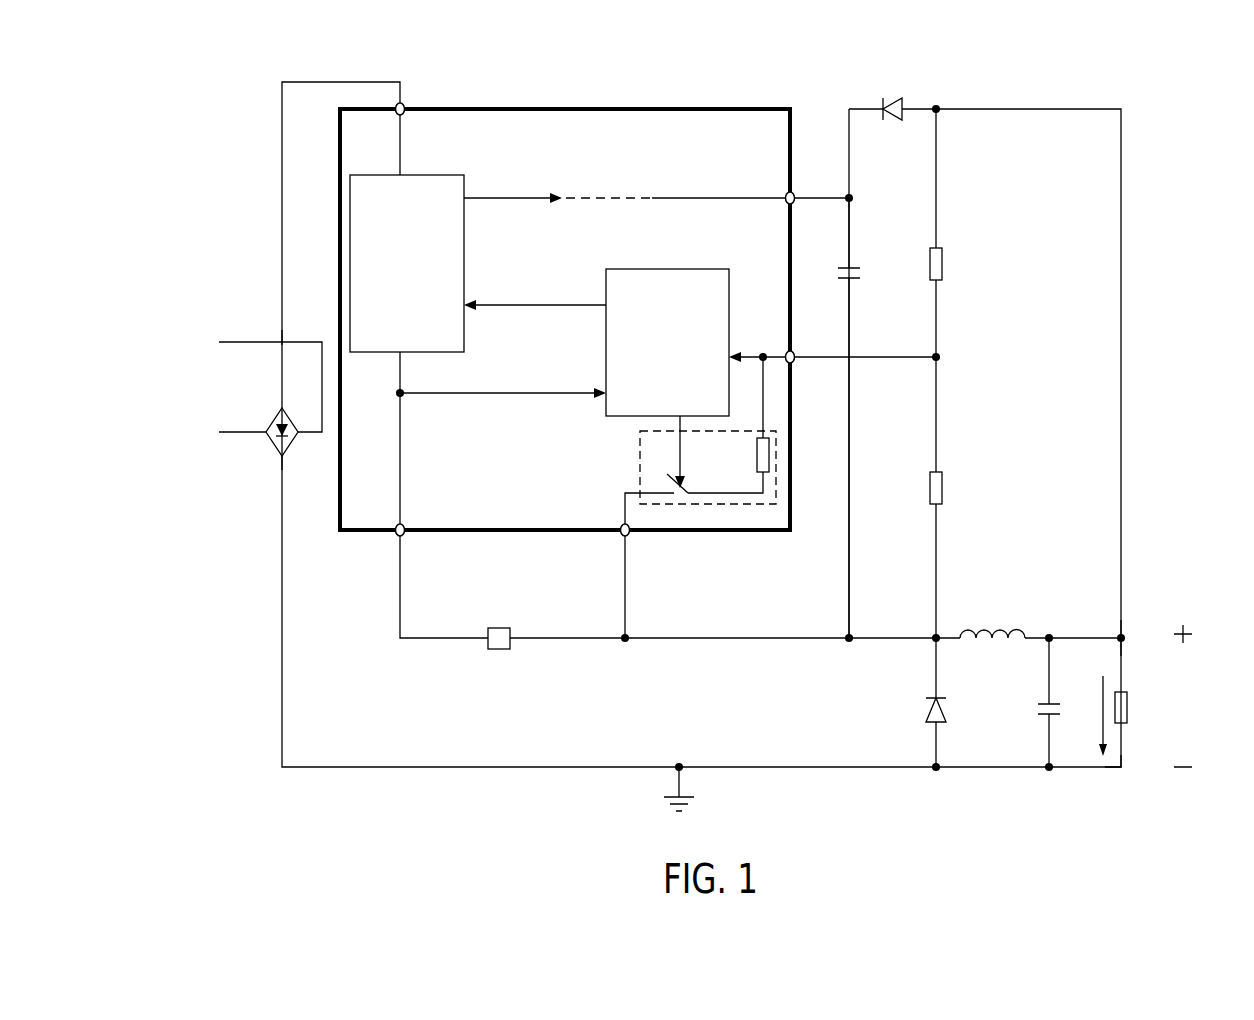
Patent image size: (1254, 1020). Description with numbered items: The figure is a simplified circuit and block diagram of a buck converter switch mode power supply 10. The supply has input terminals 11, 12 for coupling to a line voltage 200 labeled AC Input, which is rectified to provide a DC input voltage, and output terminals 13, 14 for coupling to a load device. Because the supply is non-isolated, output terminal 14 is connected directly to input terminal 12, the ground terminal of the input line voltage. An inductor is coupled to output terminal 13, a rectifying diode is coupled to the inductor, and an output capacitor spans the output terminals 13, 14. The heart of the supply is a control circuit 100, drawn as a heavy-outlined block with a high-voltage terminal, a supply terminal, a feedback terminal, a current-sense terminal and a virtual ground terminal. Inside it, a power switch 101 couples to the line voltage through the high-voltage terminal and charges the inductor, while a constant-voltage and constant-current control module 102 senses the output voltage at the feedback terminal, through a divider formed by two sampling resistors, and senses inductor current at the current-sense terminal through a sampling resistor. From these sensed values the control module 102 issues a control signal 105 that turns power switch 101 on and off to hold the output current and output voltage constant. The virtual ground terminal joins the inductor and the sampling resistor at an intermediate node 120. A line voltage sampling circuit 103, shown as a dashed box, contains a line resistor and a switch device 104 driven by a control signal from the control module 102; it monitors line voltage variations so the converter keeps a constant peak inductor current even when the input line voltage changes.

The buck converter switch mode power supply 10 is at (1144, 82).
The input terminal 11 is at (277, 336).
The input terminal 12 is at (278, 458).
The output terminal 13 is at (1114, 630).
The output terminal 14 is at (1107, 772).
The control circuit 100 is at (583, 109).
The power switch 101 is at (440, 175).
The constant-voltage and constant-current control module 102 is at (663, 269).
The line voltage sampling circuit 103 is at (640, 466).
The switch device 104 is at (681, 494).
The control signal 105 is at (535, 291).
The intermediate node 120 is at (628, 640).
The line voltage 200 is at (243, 399).